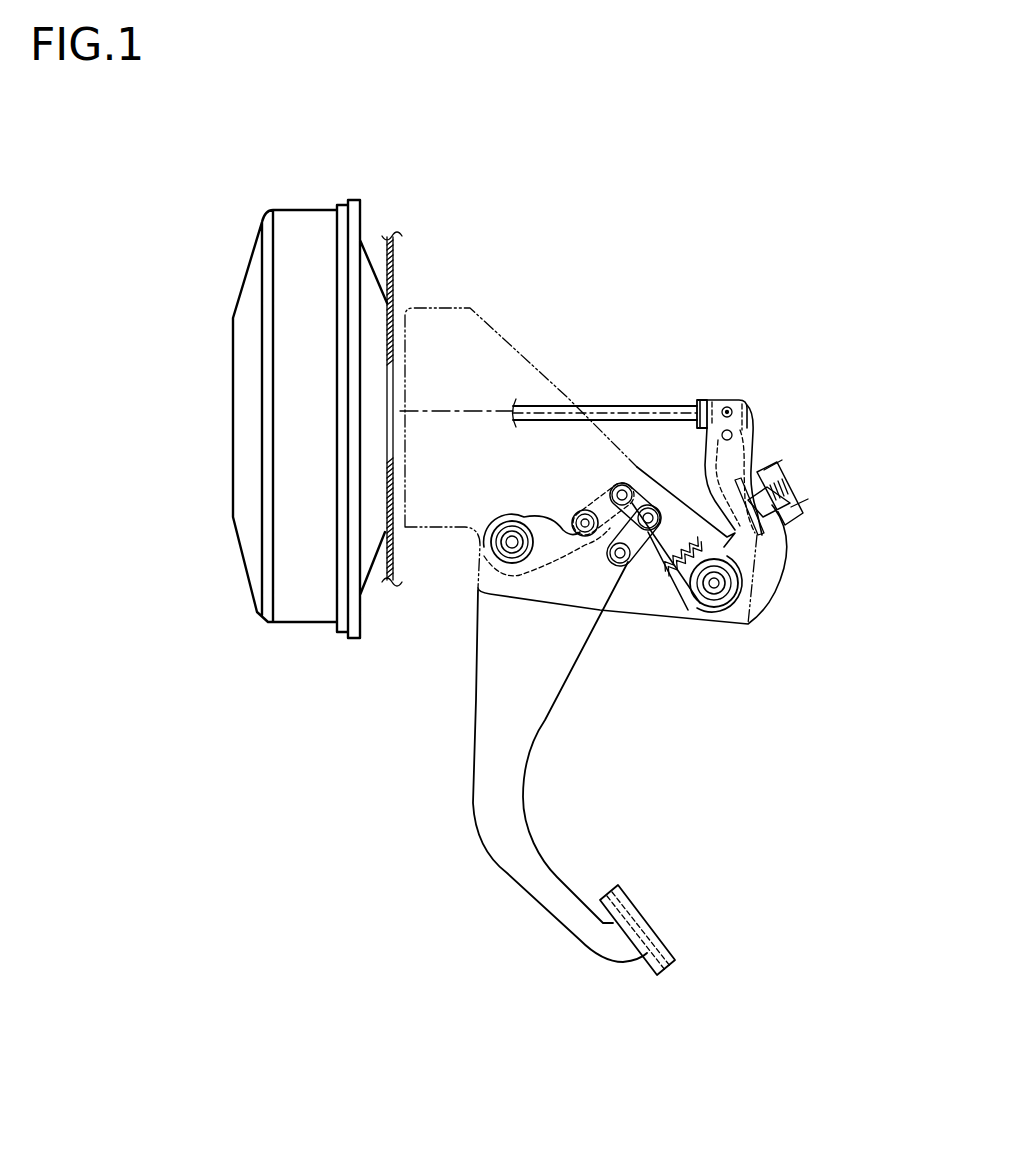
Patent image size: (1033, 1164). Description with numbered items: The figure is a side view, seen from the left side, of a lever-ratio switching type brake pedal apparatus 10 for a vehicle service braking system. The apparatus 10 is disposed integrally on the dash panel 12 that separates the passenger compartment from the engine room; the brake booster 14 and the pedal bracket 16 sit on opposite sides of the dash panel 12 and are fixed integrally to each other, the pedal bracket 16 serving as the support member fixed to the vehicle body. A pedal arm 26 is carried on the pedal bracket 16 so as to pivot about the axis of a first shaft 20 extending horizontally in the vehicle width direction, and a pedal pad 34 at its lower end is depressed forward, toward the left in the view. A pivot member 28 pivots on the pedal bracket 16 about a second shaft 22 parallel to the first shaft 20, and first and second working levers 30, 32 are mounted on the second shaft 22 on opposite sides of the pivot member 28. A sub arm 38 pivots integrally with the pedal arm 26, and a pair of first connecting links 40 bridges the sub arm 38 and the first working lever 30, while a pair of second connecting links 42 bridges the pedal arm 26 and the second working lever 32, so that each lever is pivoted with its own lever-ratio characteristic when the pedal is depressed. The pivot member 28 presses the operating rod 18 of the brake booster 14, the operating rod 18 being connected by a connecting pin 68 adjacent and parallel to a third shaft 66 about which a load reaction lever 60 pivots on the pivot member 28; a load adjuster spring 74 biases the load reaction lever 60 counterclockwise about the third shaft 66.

The lever-ratio switching type brake pedal apparatus 10 is at (764, 266).
The dash panel 12 is at (398, 255).
The brake booster 14 is at (297, 218).
The pedal bracket 16 is at (478, 318).
The operating rod 18 is at (657, 405).
The first shaft 20 is at (503, 560).
The second shaft 22 is at (714, 590).
The pedal arm 26 is at (488, 785).
The pivot member 28 is at (772, 568).
The first working lever 30 is at (643, 500).
The second working lever 32 is at (660, 580).
The pedal pad 34 is at (648, 923).
The sub arm 38 is at (558, 505).
The first connecting links 40 is at (597, 490).
The second connecting links 42 is at (622, 560).
The load reaction lever 60 is at (808, 518).
The third shaft 66 is at (733, 435).
The connecting pin 68 is at (727, 407).
The load adjuster spring 74 is at (792, 493).